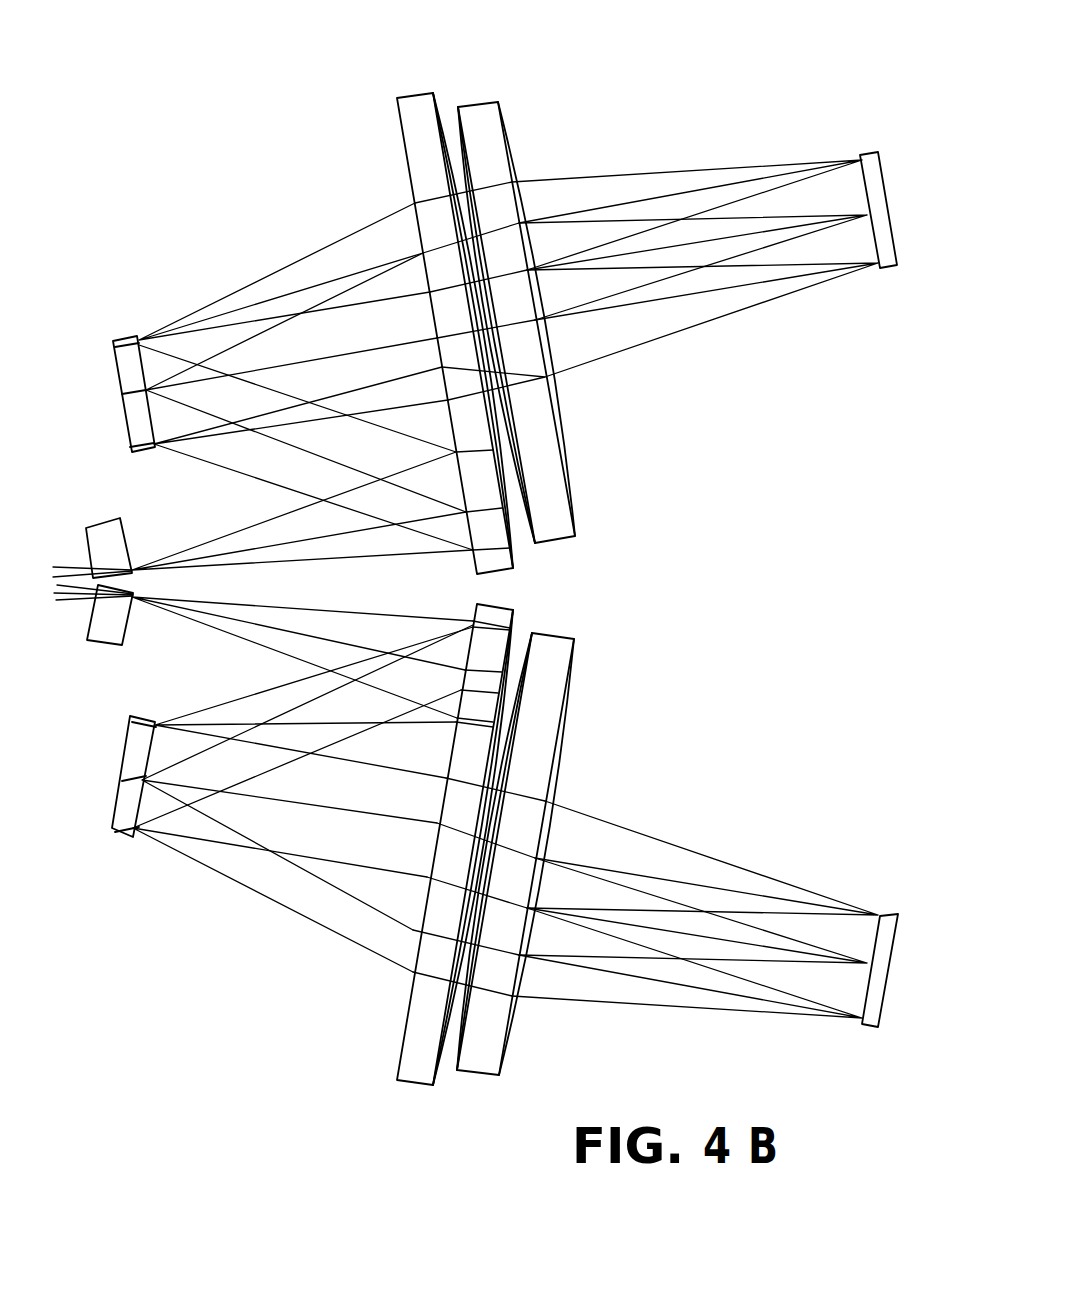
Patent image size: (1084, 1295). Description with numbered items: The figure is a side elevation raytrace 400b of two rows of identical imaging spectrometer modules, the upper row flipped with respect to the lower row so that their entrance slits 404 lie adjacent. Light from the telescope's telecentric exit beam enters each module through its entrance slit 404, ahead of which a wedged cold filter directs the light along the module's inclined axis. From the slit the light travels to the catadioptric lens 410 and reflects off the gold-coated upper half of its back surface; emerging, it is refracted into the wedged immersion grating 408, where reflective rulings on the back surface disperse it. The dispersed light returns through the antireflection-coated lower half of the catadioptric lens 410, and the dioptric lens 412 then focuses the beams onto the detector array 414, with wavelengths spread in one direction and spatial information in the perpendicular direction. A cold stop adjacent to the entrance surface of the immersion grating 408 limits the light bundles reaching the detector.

The raytrace 400b is at (311, 77).
The entrance slit 404 is at (127, 535).
The immersion grating 408 is at (128, 337).
The catadioptric lens 410 is at (418, 94).
The dioptric lens 412 is at (486, 101).
The detector array 414 is at (862, 152).